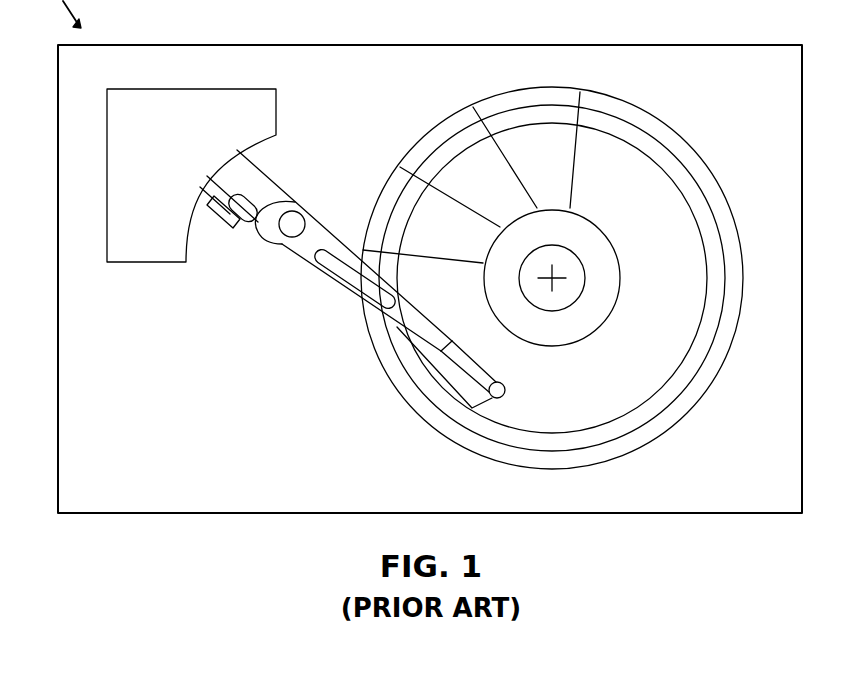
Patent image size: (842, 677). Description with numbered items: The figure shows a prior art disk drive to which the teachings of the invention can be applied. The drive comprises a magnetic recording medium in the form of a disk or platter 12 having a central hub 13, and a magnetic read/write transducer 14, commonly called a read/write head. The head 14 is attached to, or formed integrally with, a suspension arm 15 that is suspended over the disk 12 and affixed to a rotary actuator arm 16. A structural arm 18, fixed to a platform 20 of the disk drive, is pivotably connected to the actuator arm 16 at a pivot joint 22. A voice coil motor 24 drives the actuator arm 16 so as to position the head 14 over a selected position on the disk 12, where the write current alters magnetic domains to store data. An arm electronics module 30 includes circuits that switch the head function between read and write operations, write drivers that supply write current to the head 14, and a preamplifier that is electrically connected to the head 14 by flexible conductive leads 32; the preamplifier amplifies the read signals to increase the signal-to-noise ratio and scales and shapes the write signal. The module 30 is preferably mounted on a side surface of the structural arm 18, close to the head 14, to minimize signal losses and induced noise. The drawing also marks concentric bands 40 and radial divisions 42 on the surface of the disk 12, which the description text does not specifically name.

The disk 12 is at (661, 160).
The hub 13 is at (608, 280).
The magnetic read/write transducer 14 is at (491, 394).
The suspension arm 15 is at (462, 368).
The rotary actuator arm 16 is at (304, 254).
The structural arm 18 is at (258, 184).
The platform 20 is at (60, 395).
The pivot joint 22 is at (294, 223).
The voice coil motor 24 is at (142, 252).
The arm electronics module 30 is at (217, 223).
The flexible conductive leads 32 is at (235, 193).
The data tracks 40 is at (523, 116).
The sector 42 is at (600, 130).